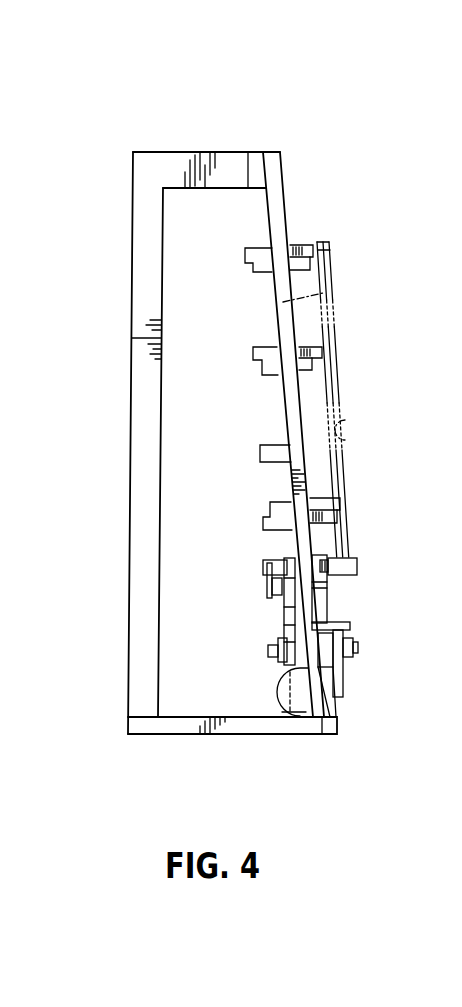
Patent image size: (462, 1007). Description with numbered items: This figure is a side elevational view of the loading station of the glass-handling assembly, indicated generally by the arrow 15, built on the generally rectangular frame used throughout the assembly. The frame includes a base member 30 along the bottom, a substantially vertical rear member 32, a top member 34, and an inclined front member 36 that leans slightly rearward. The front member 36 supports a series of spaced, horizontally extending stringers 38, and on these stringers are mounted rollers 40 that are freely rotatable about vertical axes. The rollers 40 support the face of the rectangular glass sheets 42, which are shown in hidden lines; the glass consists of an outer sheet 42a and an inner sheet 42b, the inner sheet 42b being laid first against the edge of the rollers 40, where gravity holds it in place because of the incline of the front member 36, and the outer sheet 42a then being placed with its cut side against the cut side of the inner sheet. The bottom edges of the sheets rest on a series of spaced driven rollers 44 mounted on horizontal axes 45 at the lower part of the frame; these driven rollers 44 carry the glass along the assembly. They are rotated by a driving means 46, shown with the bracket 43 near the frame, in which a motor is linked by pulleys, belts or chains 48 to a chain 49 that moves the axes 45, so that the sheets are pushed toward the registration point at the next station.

The frame assembly 15 is at (304, 160).
The base member 30 is at (245, 725).
The rear member 32 is at (150, 490).
The top member 34 is at (223, 152).
The inclined front member 36 is at (277, 223).
The stringers 38 is at (273, 455).
The rollers 40 is at (312, 244).
The sheets of glass 42 is at (340, 393).
The outer sheet 42a is at (330, 350).
The inner sheet 42b is at (283, 302).
The bracket 43 is at (347, 599).
The driven rollers 44 is at (357, 565).
The horizontal axes 45 is at (265, 560).
The driving means 46 is at (380, 640).
The pulleys, belts or chains 48 is at (278, 630).
The chain 49 is at (272, 587).